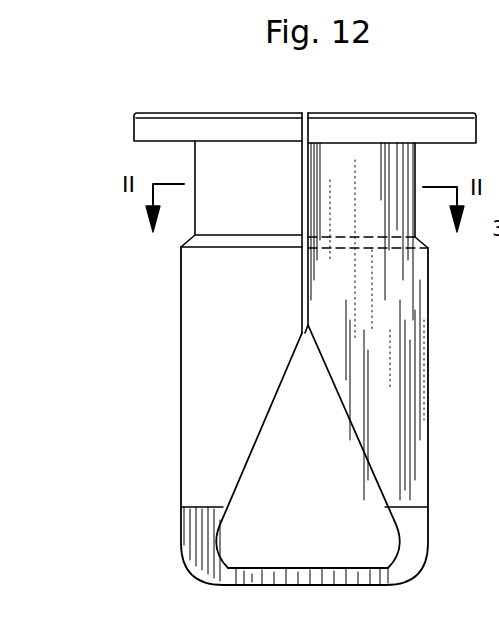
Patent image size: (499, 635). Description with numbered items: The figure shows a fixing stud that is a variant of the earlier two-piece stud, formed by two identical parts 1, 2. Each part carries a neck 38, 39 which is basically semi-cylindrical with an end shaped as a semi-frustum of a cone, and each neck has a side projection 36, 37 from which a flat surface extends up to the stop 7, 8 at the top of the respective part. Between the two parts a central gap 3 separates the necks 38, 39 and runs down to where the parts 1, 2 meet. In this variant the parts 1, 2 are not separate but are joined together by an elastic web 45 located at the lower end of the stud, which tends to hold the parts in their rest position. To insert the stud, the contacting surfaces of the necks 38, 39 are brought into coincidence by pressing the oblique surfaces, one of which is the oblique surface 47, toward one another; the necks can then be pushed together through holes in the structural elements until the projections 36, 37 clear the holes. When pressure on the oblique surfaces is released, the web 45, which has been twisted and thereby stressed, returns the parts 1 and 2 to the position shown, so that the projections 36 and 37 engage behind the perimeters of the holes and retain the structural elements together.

The part 1 is at (452, 403).
The part 2 is at (172, 370).
The slit 3 is at (304, 340).
The stop 7 is at (396, 130).
The stop 8 is at (196, 124).
The side projection 36 is at (340, 235).
The side projection 37 is at (233, 243).
The neck 38 is at (370, 165).
The neck 39 is at (212, 160).
The elastic web 45 is at (293, 575).
The oblique surface 47 is at (256, 347).